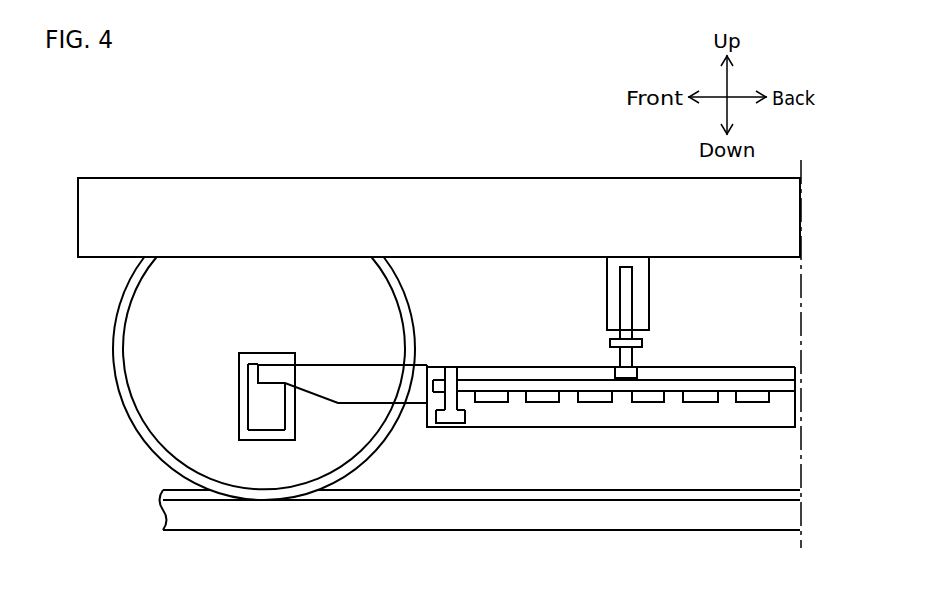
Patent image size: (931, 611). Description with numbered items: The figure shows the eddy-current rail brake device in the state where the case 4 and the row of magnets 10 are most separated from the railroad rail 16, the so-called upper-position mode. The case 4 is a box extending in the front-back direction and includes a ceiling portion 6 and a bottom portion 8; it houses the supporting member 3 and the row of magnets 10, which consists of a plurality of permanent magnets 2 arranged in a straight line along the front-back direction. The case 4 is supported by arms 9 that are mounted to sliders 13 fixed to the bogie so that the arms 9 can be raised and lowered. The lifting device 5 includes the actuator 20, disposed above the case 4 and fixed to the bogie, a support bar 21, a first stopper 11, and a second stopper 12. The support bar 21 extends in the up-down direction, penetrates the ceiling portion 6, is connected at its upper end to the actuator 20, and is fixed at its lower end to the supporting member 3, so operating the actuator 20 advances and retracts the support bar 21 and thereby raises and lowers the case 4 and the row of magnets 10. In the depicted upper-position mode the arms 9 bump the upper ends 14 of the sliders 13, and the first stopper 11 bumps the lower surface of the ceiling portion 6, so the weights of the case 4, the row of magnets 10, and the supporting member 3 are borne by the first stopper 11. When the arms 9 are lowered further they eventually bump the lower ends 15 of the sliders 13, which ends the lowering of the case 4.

The permanent magnets 2 is at (541, 402).
The supporting member 3 is at (537, 387).
The case 4 is at (611, 383).
The lifting device 5 is at (748, 304).
The ceiling portion 6 is at (504, 367).
The bottom portion 8 is at (640, 427).
The arms 9 is at (349, 364).
The row of magnets 10 is at (500, 415).
The first stopper 11 is at (610, 373).
The second stopper 12 is at (643, 341).
The sliders 13 is at (246, 398).
The upper ends 14 is at (267, 363).
The lower ends 15 is at (268, 440).
The railroad rail 16 is at (163, 492).
The actuator 20 is at (649, 280).
The support bar 21 is at (633, 360).